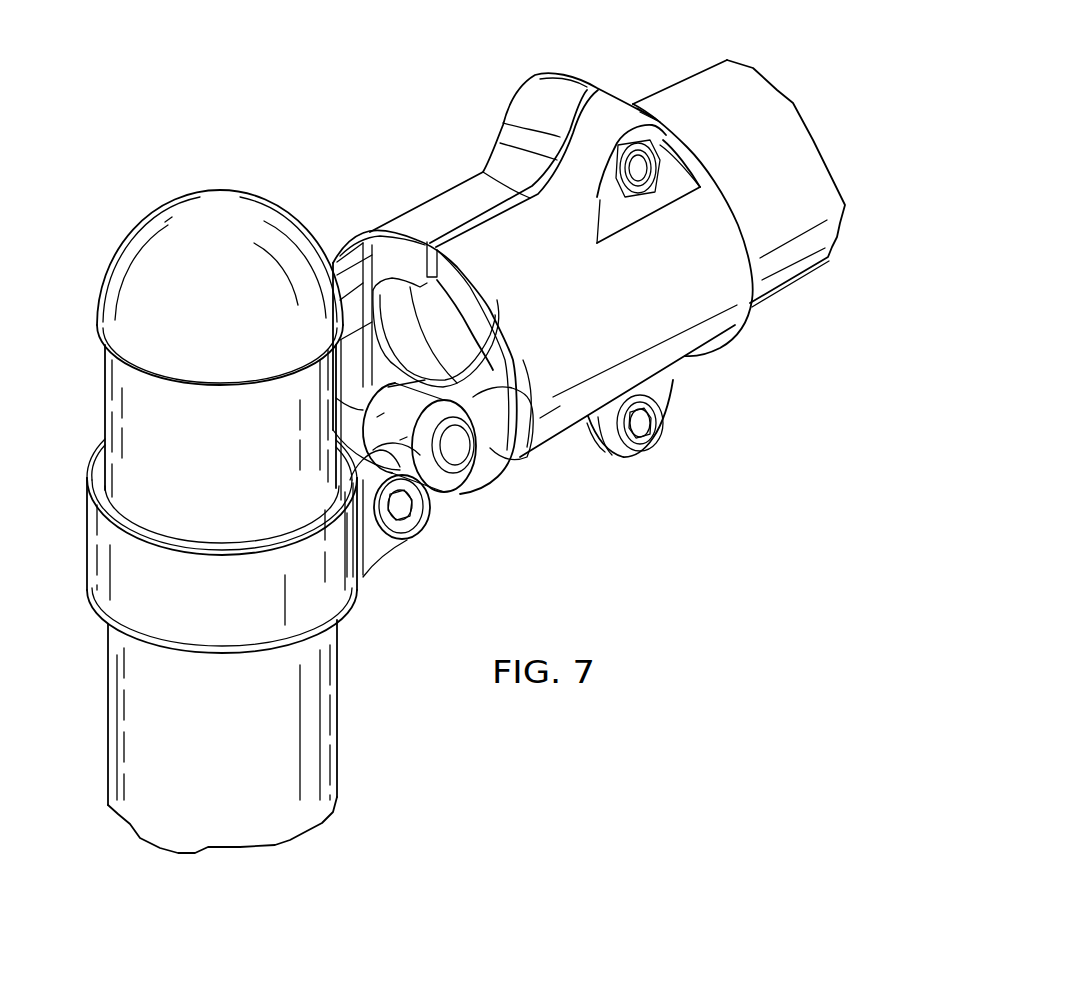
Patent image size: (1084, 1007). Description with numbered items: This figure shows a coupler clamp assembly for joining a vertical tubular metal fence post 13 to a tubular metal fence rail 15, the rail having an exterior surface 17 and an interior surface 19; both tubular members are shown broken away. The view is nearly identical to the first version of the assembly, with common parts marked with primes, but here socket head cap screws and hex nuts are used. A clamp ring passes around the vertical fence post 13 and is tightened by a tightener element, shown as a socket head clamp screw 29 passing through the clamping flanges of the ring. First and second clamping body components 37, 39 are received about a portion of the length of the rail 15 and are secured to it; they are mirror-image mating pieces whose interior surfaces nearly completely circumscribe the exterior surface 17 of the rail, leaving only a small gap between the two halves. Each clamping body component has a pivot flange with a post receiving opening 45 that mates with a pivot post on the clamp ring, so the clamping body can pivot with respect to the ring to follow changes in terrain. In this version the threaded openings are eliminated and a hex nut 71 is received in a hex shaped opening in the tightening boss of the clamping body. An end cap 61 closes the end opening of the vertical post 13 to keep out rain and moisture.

The end cap 61 is at (207, 193).
The vertical tubular metal fence post 13 is at (103, 703).
The first clamping body component 37 is at (440, 200).
The exterior surface 17 is at (670, 92).
The interior surface 19 is at (812, 133).
The tubular metal fence rail 15 is at (792, 292).
The hex nut 71 is at (645, 190).
The second clamping body component 39 is at (712, 342).
The post receiving opening 45 is at (483, 442).
The socket head clamp screw 29 is at (402, 545).